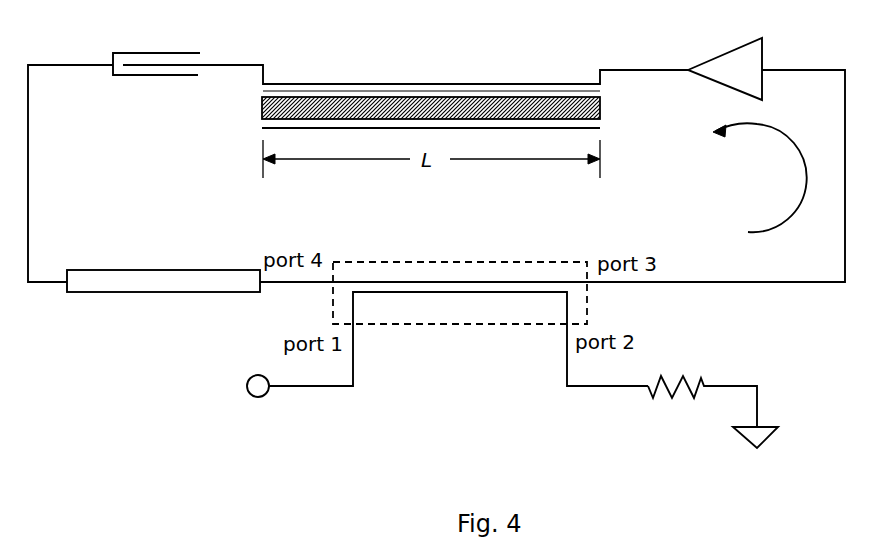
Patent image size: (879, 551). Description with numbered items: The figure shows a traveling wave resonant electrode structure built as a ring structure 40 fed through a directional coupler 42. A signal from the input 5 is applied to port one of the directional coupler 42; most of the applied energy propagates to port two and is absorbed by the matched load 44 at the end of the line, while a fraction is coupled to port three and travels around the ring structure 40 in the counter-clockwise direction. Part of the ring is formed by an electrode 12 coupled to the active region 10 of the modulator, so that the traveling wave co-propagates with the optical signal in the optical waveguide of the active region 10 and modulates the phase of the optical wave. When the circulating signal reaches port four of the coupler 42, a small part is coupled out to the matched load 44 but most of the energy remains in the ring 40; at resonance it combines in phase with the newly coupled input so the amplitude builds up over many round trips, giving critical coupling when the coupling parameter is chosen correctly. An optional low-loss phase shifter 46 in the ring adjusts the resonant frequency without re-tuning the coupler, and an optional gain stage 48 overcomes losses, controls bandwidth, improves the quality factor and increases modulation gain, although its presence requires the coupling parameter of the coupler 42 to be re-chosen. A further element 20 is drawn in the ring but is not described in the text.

The ring structure 40 is at (29, 195).
The low-loss phase shifter 46 is at (125, 53).
The electrode 12 is at (380, 84).
The active region 10 is at (260, 107).
The gain stage 48 is at (716, 88).
The optical element 20 is at (122, 270).
The directional coupler 42 is at (425, 262).
The input 5 is at (247, 384).
The matched load 44 is at (657, 377).